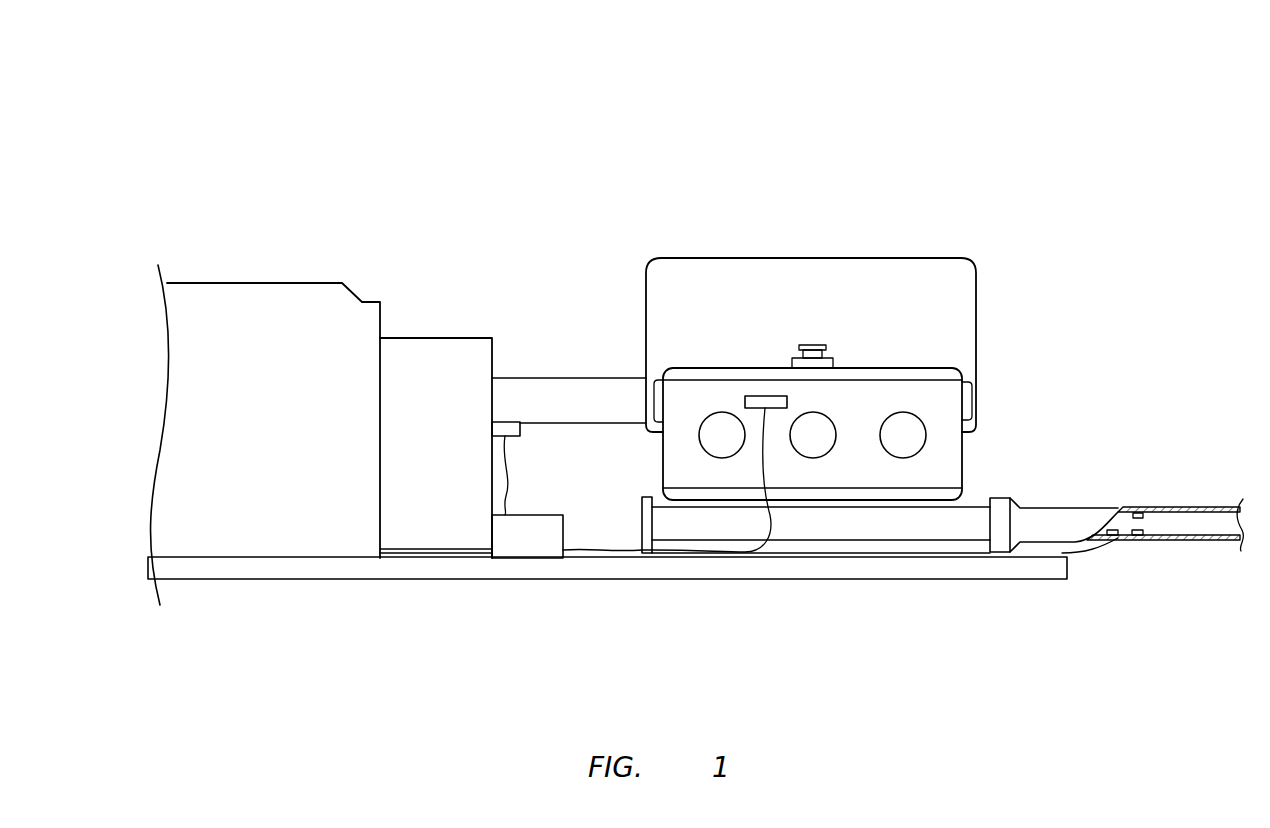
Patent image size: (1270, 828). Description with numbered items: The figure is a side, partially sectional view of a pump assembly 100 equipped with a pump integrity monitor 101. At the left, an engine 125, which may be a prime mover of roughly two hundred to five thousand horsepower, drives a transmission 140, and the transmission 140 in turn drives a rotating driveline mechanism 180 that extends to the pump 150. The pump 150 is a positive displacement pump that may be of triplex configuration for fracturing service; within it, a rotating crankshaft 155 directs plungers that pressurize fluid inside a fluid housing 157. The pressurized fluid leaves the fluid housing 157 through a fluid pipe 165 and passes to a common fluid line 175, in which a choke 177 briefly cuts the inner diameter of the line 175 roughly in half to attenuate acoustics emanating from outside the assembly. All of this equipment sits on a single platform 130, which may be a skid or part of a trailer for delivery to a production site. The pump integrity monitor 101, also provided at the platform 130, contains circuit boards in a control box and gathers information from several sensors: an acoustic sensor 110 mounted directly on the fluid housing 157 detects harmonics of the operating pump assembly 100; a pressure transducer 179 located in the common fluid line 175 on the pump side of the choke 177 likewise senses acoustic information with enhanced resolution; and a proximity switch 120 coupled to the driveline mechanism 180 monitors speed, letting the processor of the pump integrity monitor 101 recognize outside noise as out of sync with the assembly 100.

The pump assembly 100 is at (158, 66).
The pump integrity monitor 101 is at (520, 540).
The acoustic sensor 110 is at (757, 398).
The proximity switch 120 is at (505, 426).
The engine 125 is at (249, 304).
The platform 130 is at (258, 563).
The transmission 140 is at (452, 350).
The pump 150 is at (759, 140).
The crankshaft 155 is at (963, 328).
The fluid housing 157 is at (948, 467).
The fluid pipe 165 is at (866, 528).
The common fluid line 175 is at (1057, 522).
The choke 177 is at (1143, 507).
The pressure transducer 179 is at (1120, 538).
The driveline mechanism 180 is at (612, 395).